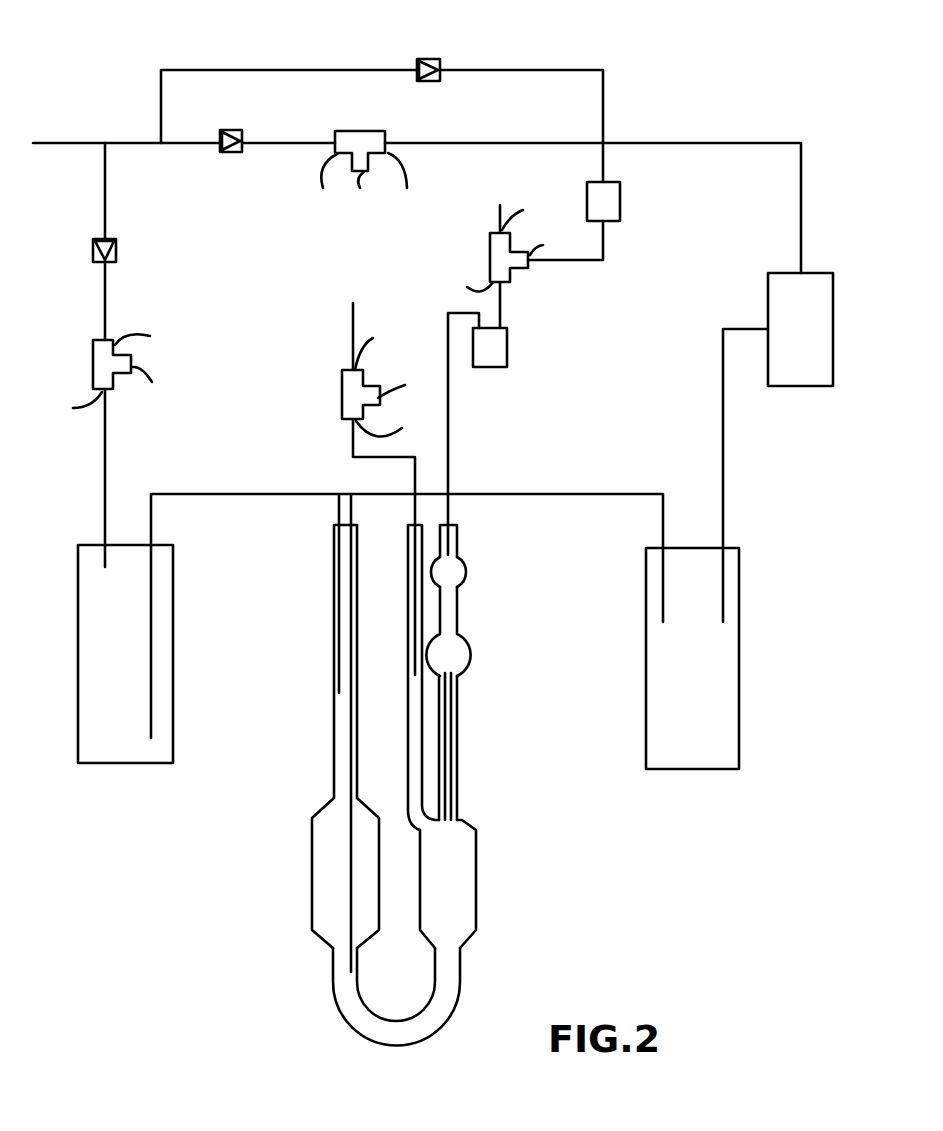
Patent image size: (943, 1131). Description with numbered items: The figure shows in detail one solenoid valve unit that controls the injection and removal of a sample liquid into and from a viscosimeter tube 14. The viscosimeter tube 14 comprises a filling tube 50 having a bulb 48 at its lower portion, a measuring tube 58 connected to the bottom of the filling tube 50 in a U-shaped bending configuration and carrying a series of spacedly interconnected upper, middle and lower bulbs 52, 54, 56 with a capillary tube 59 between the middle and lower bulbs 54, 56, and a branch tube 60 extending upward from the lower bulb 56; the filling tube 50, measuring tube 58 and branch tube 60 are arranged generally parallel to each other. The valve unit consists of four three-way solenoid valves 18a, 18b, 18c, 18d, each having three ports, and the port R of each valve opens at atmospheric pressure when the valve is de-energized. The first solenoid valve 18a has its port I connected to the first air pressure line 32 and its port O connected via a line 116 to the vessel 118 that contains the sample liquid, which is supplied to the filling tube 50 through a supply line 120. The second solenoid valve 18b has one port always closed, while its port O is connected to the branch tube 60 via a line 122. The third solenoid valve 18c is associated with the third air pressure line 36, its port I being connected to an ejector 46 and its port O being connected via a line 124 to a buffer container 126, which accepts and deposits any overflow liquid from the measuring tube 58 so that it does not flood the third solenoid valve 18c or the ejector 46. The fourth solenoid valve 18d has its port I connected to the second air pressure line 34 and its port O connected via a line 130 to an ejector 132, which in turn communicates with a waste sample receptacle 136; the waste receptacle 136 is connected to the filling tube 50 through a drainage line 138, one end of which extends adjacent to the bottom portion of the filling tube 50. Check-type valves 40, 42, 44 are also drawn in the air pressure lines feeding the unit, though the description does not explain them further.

The viscosimeter tube 14 is at (330, 950).
The first solenoid valve 18a is at (93, 349).
The second solenoid valve 18b is at (342, 385).
The third solenoid valve 18c is at (490, 270).
The fourth solenoid valve 18d is at (350, 131).
The first air pressure line 32 is at (107, 288).
The second air pressure line 34 is at (285, 145).
The third air pressure line 36 is at (560, 70).
The valve 40 is at (93, 253).
The check valve 42 is at (226, 153).
The check valve 44 is at (425, 58).
The ejector 46 is at (607, 212).
The bulb 48 is at (323, 882).
The filling tube 50 is at (338, 638).
The upper bulb 52 is at (452, 577).
The middle bulb 54 is at (455, 663).
The lower bulb 56 is at (462, 888).
The measuring tube 58 is at (455, 543).
The capillary tube 59 is at (447, 783).
The branch tube 60 is at (417, 678).
The line 116 is at (105, 472).
The vessel 118 is at (93, 745).
The supply line 120 is at (205, 494).
The line 122 is at (353, 443).
The line 124 is at (502, 300).
The buffer container 126 is at (496, 368).
The line 130 is at (677, 143).
The ejector 132 is at (795, 368).
The waste sample receptacle 136 is at (625, 865).
The drainage line 138 is at (580, 494).